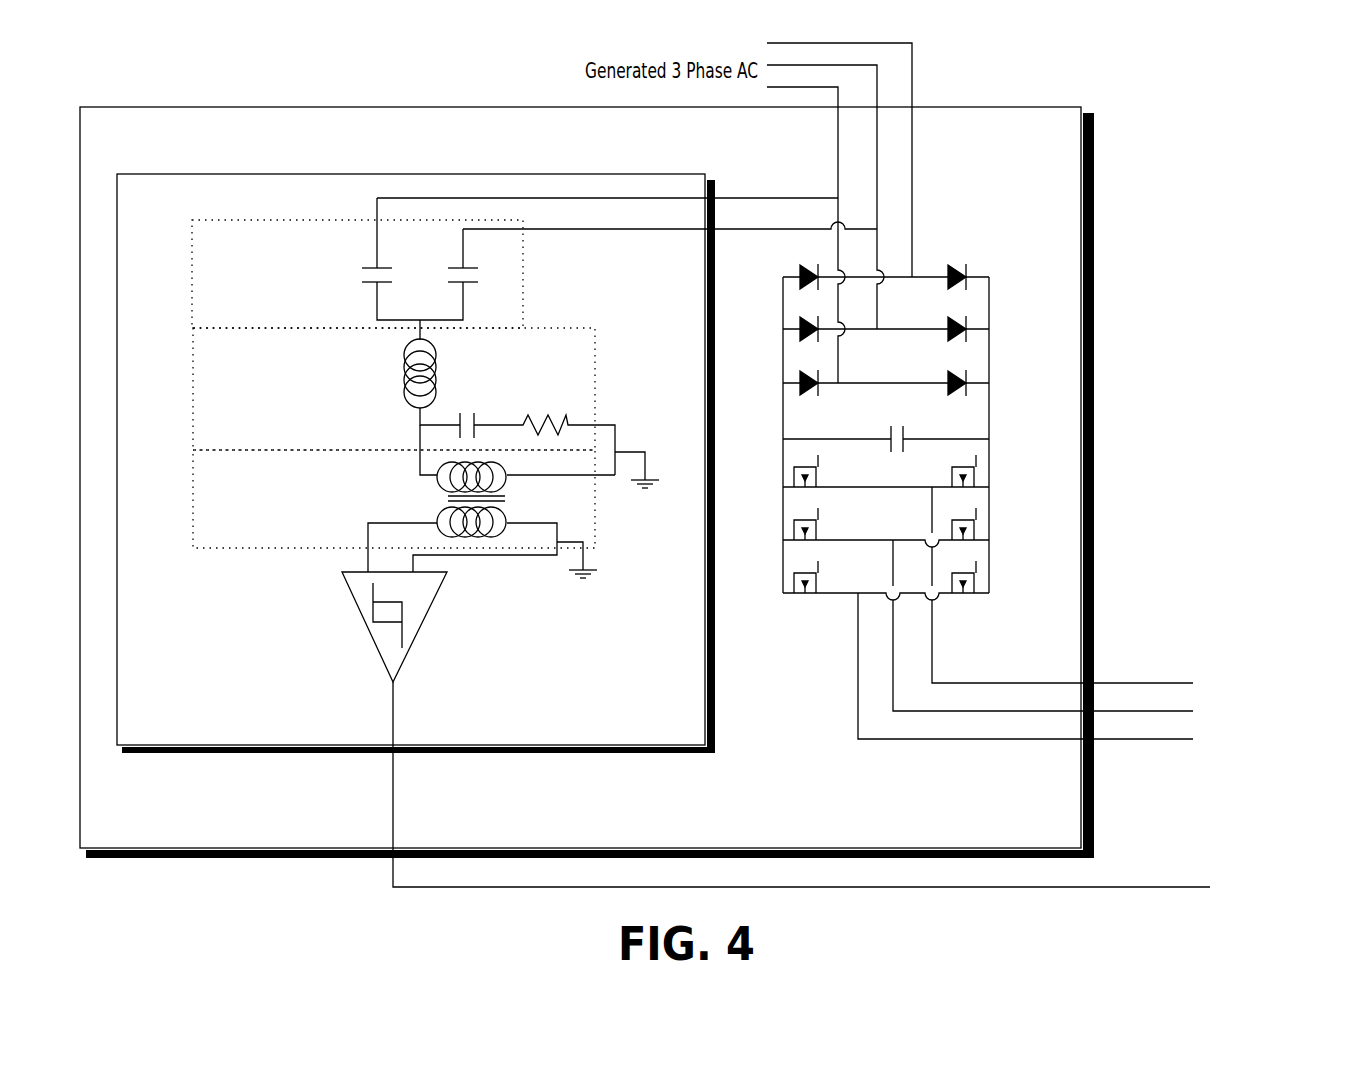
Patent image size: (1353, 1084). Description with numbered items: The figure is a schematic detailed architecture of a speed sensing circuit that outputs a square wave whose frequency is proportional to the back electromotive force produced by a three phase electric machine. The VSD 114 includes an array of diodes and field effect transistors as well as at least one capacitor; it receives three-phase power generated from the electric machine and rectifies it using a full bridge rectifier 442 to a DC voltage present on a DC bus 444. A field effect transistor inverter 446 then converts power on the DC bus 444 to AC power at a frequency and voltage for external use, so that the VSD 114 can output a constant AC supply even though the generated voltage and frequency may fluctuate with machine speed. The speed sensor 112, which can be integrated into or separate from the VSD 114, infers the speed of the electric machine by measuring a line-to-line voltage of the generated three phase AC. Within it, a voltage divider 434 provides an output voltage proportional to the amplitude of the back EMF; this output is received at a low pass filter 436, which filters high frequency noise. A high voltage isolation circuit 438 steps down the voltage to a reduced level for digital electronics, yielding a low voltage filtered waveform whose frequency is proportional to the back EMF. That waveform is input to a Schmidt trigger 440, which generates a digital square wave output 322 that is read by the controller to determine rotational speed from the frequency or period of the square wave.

The VSD 114 is at (163, 157).
The speed sensor 112 is at (263, 217).
The voltage divider 434 is at (272, 302).
The low pass filter 436 is at (268, 409).
The high voltage isolation circuit 438 is at (323, 506).
The Schmidt trigger 440 is at (268, 652).
The square wave output 322 is at (495, 827).
The DC bus 444 is at (782, 330).
The full bridge rectifier 442 is at (1007, 255).
The field effect transistor inverter 446 is at (1004, 448).